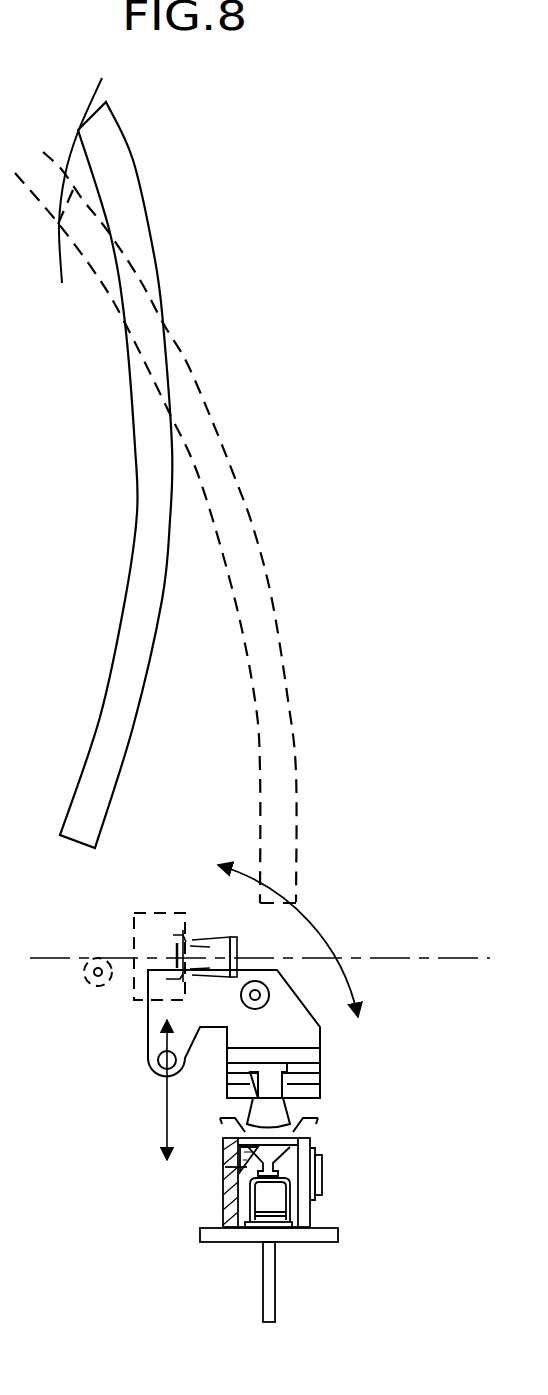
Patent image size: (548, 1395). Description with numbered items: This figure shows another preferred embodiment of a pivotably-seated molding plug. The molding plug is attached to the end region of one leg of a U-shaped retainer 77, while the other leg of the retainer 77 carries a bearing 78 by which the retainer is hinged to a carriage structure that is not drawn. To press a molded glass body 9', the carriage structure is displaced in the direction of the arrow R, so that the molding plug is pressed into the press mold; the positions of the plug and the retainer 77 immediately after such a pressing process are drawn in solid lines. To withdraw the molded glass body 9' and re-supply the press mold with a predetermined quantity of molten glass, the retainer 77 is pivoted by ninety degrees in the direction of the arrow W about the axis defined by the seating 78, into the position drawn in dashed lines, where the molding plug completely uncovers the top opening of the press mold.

The U-shaped retainer 77 is at (150, 1033).
The bearing 78 is at (156, 1078).
The molded glass body 9' is at (323, 1195).
The arrow W is at (317, 912).
The arrow R is at (166, 1110).